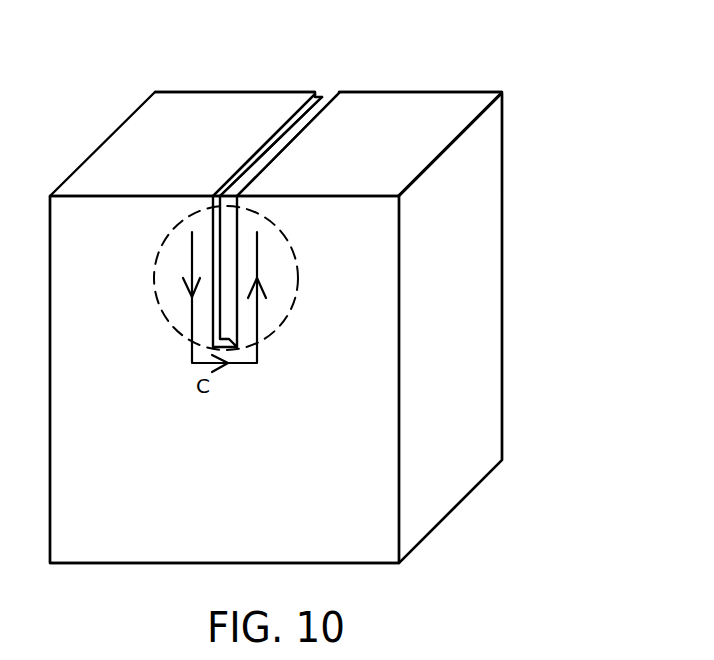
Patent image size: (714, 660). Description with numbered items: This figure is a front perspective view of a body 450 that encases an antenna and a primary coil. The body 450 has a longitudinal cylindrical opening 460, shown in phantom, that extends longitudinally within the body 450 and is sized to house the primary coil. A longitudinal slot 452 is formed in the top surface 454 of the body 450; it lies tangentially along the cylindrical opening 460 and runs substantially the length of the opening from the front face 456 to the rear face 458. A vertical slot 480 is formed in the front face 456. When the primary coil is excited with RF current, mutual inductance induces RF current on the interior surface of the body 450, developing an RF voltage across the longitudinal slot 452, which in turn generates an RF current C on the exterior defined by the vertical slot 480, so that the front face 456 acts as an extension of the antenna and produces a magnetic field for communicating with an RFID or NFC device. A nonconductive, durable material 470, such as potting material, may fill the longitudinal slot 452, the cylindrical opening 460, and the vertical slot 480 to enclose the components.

The body 450 is at (488, 255).
The longitudinal slot 452 is at (308, 130).
The top surface 454 is at (471, 111).
The front face 456 is at (377, 370).
The rear face 458 is at (503, 184).
The longitudinal cylindrical opening 460 is at (296, 299).
The nonconductive, durable material 470 is at (266, 147).
The vertical slot 480 is at (238, 242).